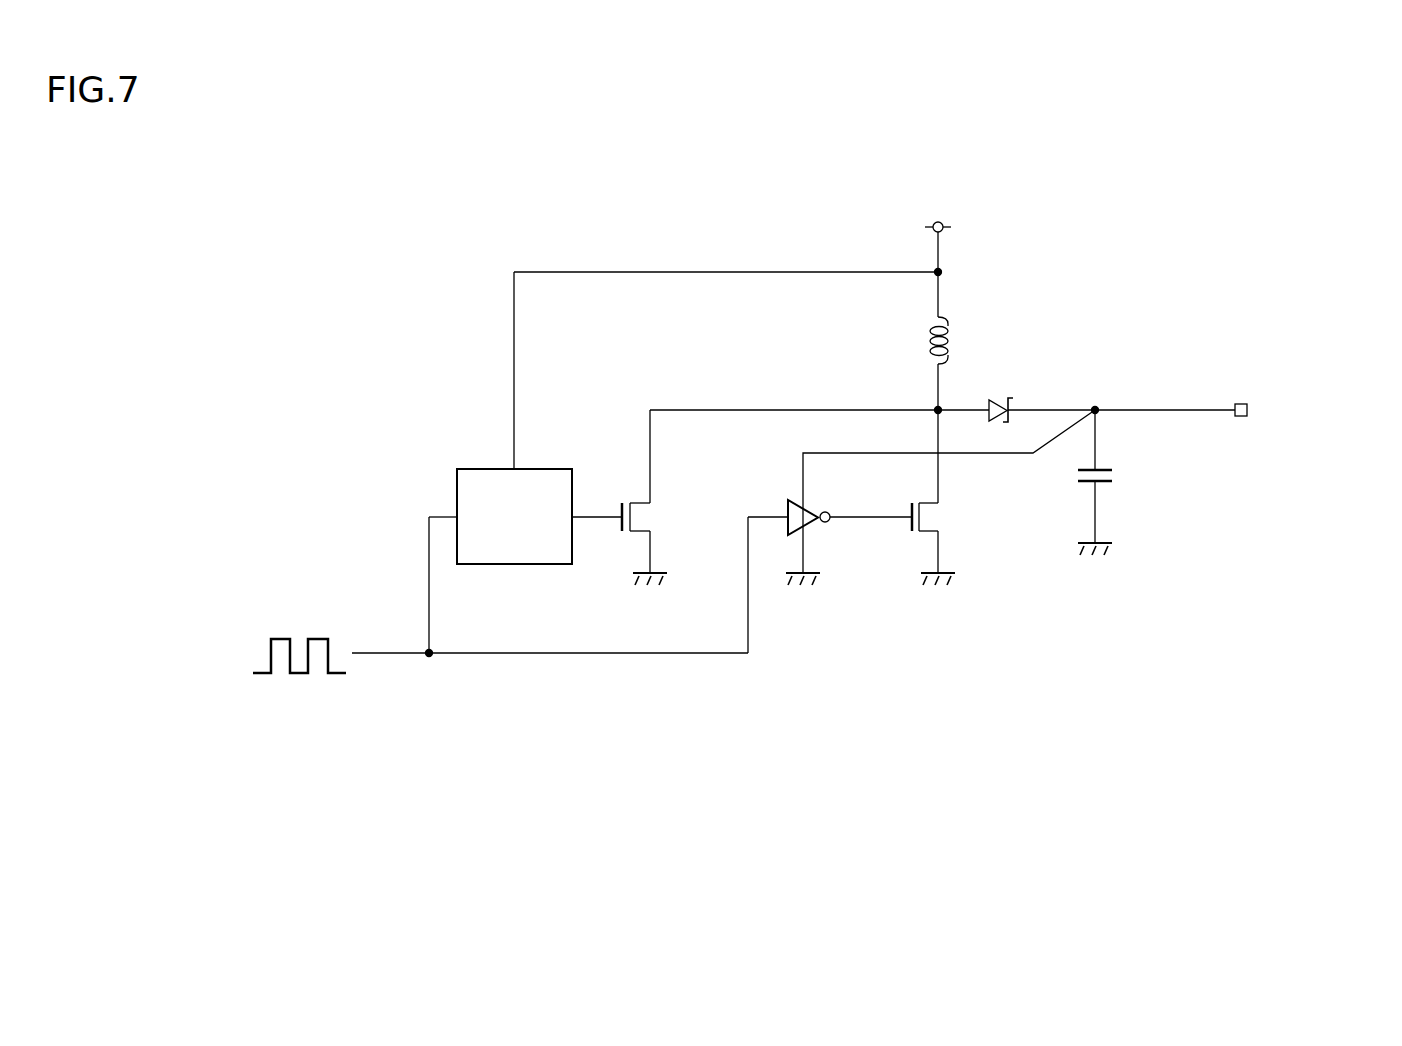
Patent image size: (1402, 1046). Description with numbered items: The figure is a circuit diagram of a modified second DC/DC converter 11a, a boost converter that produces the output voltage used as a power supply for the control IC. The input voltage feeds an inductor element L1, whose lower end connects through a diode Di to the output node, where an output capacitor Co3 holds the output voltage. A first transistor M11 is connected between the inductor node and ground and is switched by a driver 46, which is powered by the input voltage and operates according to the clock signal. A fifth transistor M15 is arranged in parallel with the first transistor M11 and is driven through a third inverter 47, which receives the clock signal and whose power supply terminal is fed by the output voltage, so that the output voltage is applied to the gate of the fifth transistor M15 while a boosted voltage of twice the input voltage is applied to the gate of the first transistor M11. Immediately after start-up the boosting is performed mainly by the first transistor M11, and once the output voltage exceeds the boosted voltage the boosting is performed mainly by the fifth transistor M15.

The second DC/DC converter 11a is at (835, 815).
The driver 46 is at (530, 565).
The third inverter 47 is at (810, 527).
The inductor element L1 is at (968, 340).
The diode Di is at (1008, 397).
The output capacitor Co3 is at (1131, 482).
The first transistor M11 is at (649, 544).
The fifth transistor M15 is at (964, 544).